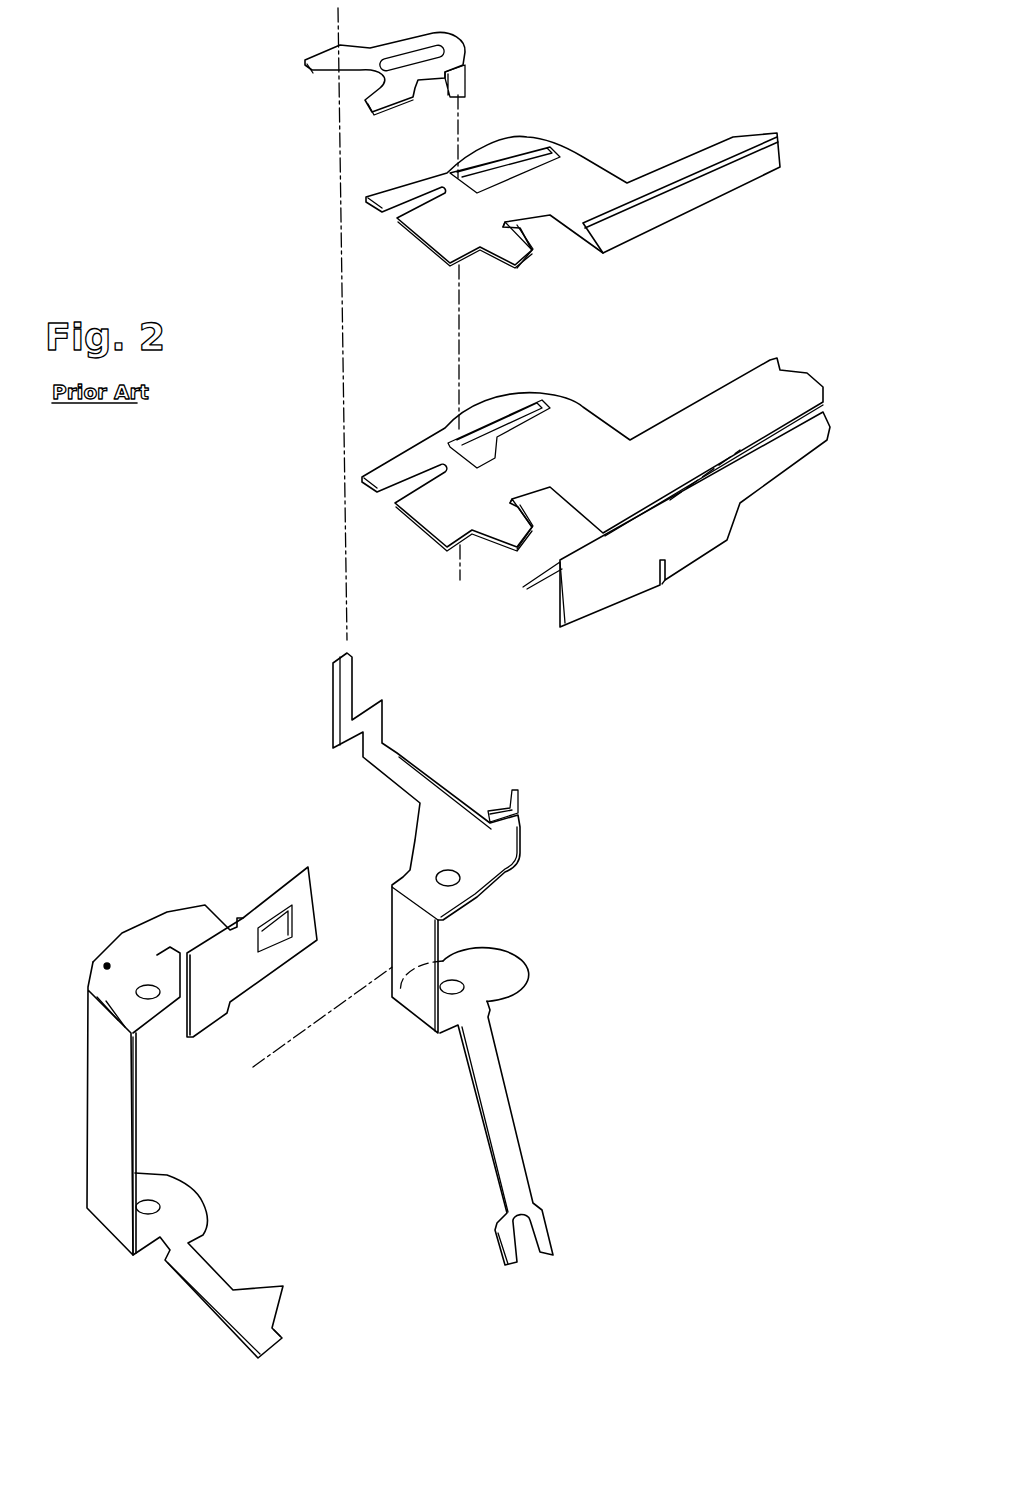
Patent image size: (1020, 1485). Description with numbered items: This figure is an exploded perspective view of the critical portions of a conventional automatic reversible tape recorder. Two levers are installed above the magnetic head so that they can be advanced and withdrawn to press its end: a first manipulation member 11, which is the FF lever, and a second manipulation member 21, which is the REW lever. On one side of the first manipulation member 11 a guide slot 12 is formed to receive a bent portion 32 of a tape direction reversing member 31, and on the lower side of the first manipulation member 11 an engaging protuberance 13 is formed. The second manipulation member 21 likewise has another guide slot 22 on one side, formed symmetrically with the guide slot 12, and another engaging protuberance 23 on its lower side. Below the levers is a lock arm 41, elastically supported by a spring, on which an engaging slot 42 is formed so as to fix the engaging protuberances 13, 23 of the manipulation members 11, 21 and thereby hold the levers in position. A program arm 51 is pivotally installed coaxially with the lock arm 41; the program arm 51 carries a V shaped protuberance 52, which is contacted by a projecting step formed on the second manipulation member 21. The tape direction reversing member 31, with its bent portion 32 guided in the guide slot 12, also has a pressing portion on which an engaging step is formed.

The first manipulation member 11 is at (695, 163).
The guide slot 12 is at (533, 157).
The engaging protuberance 13 is at (523, 250).
The second manipulation member 21 is at (720, 443).
The guide slot 22 is at (517, 420).
The engaging protuberance 23 is at (507, 528).
The tape direction reversing member 31 is at (452, 40).
The bent portion 32 is at (466, 77).
The lock arm 41 is at (158, 928).
The engaging slot 42 is at (273, 925).
The program arm 51 is at (432, 783).
The V shaped protuberance 52 is at (518, 815).